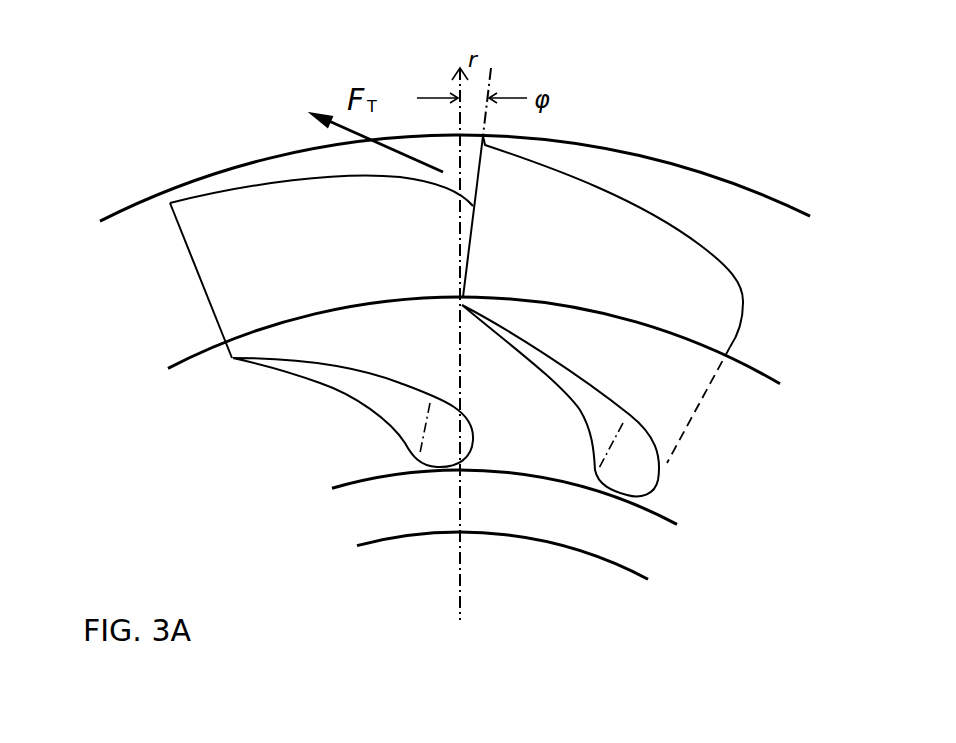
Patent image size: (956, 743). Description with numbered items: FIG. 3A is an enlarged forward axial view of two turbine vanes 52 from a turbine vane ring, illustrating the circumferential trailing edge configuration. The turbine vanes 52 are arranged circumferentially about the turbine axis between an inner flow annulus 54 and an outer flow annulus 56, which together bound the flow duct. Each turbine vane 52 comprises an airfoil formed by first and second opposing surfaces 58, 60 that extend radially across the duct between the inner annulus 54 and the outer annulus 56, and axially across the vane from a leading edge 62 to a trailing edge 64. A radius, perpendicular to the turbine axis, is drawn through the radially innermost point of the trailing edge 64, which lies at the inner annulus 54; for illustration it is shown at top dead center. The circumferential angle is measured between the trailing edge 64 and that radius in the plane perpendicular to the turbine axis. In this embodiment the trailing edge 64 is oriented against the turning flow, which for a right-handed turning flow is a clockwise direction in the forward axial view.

The turbine vane 52 is at (640, 258).
The inner flow annulus 54 is at (205, 352).
The outer flow annulus 56 is at (647, 152).
The first airfoil surface 58 is at (237, 213).
The second airfoil surface 60 is at (318, 393).
The leading edge 62 is at (745, 340).
The trailing edge 64 is at (185, 276).